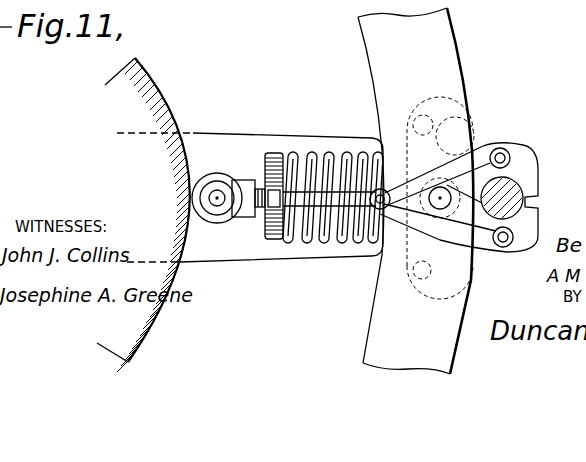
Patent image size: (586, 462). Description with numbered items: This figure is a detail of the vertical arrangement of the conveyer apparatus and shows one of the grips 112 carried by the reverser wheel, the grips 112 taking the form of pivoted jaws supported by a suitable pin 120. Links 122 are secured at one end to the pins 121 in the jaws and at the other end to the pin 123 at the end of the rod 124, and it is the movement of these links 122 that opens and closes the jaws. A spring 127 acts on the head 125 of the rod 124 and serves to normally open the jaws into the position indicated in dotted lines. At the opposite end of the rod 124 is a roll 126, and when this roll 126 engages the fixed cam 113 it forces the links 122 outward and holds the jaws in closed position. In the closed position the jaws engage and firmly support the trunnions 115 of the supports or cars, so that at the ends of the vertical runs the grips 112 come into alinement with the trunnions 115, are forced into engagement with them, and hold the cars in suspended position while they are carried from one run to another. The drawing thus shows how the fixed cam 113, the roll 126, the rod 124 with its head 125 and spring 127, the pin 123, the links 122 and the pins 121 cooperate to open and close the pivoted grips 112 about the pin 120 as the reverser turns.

The fixed cam 113 is at (170, 96).
The roll 126 is at (213, 168).
The head 125 is at (272, 152).
The rod 124 is at (300, 153).
The spring 127 is at (335, 152).
The pin 123 is at (378, 256).
The links 122 is at (476, 228).
The pin 120 is at (440, 193).
The grips 112 is at (523, 158).
The trunnions 115 is at (522, 187).
The pins 121 is at (503, 247).